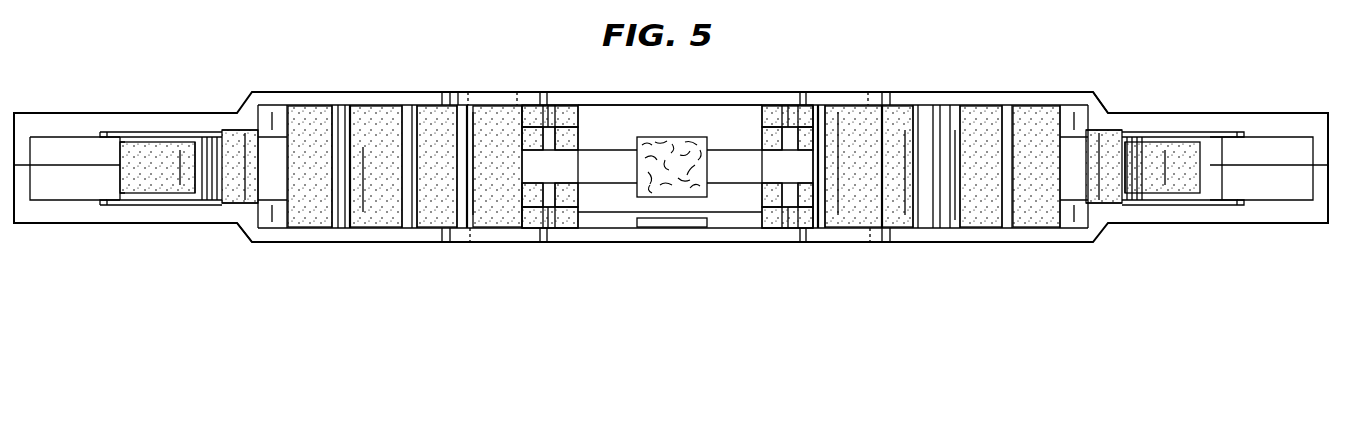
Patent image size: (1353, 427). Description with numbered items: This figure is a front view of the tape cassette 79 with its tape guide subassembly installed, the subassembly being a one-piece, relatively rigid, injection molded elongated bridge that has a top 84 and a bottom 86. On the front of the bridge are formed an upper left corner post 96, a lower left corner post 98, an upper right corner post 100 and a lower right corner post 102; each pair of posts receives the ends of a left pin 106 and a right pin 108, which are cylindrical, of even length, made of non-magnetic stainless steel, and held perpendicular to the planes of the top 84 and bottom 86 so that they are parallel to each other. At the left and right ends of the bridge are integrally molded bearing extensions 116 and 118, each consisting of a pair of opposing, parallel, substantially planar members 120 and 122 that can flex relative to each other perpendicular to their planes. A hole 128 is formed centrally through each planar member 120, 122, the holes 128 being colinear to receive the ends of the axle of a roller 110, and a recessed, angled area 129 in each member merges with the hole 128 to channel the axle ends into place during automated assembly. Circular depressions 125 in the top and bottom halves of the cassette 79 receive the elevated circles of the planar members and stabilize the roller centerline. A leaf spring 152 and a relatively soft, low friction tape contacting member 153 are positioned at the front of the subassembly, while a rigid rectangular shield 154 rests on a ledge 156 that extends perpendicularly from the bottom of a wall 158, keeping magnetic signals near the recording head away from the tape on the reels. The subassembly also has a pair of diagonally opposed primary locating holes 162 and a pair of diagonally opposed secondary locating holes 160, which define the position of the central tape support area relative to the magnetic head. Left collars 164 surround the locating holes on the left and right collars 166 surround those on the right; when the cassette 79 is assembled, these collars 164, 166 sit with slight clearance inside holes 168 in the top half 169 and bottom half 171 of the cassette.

The tape cassette 79 is at (121, 91).
The top 84 is at (900, 105).
The bottom 86 is at (365, 228).
The upper left corner post 96 is at (585, 105).
The lower left corner post 98 is at (532, 212).
The upper right corner post 100 is at (760, 115).
The lower right corner post 102 is at (805, 225).
The left pin 106 is at (548, 138).
The right pin 108 is at (790, 140).
The roller 110 is at (130, 158).
The bearing extension 116 is at (237, 220).
The bearing extension 118 is at (1108, 116).
The planar member 120 is at (210, 130).
The planar member 122 is at (120, 207).
The circular depression 125 is at (100, 132).
The hole 128 is at (172, 130).
The recessed, angled area 129 is at (147, 134).
The leaf spring 152 is at (718, 160).
The tape contacting member 153 is at (650, 140).
The shield 154 is at (620, 112).
The ledge 156 is at (670, 228).
The wall 158 is at (605, 222).
The secondary locating hole 160 is at (470, 98).
The primary locating hole 162 is at (822, 103).
The left collar 164 is at (457, 92).
The right collar 166 is at (813, 92).
The hole 168 is at (445, 92).
The top half 169 is at (293, 98).
The bottom half 171 is at (296, 233).